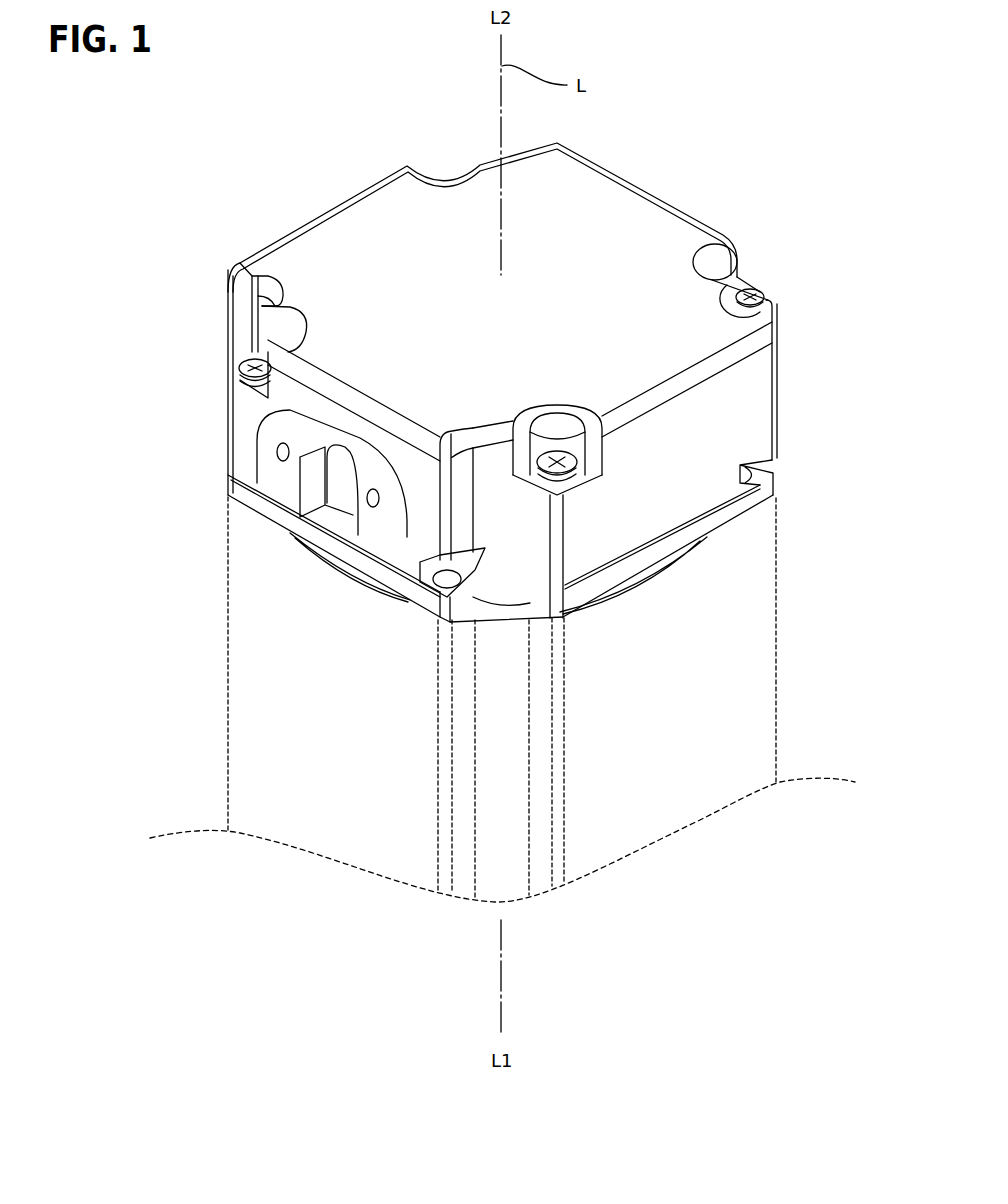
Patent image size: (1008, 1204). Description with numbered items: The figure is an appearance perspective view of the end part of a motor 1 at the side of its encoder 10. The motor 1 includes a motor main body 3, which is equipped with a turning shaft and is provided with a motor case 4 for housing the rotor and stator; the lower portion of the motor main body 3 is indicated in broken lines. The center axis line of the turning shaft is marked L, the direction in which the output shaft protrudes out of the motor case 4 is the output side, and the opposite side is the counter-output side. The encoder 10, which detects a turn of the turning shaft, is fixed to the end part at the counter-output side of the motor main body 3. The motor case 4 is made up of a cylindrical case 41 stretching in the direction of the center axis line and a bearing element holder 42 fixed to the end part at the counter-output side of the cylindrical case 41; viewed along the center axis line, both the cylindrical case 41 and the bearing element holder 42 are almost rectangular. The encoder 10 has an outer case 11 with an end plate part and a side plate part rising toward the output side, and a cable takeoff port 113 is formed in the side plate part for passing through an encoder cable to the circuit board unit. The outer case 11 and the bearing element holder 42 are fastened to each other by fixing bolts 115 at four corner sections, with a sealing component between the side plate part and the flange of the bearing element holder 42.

The motor 1 is at (726, 98).
The encoder 10 is at (210, 341).
The outer case 11 is at (790, 383).
The fixing bolts 115 is at (256, 373).
The cable takeoff port 113 is at (303, 506).
The motor case 4 is at (855, 440).
The bearing element holder 42 is at (791, 477).
The cylindrical case 41 is at (794, 547).
The motor main body 3 is at (208, 750).